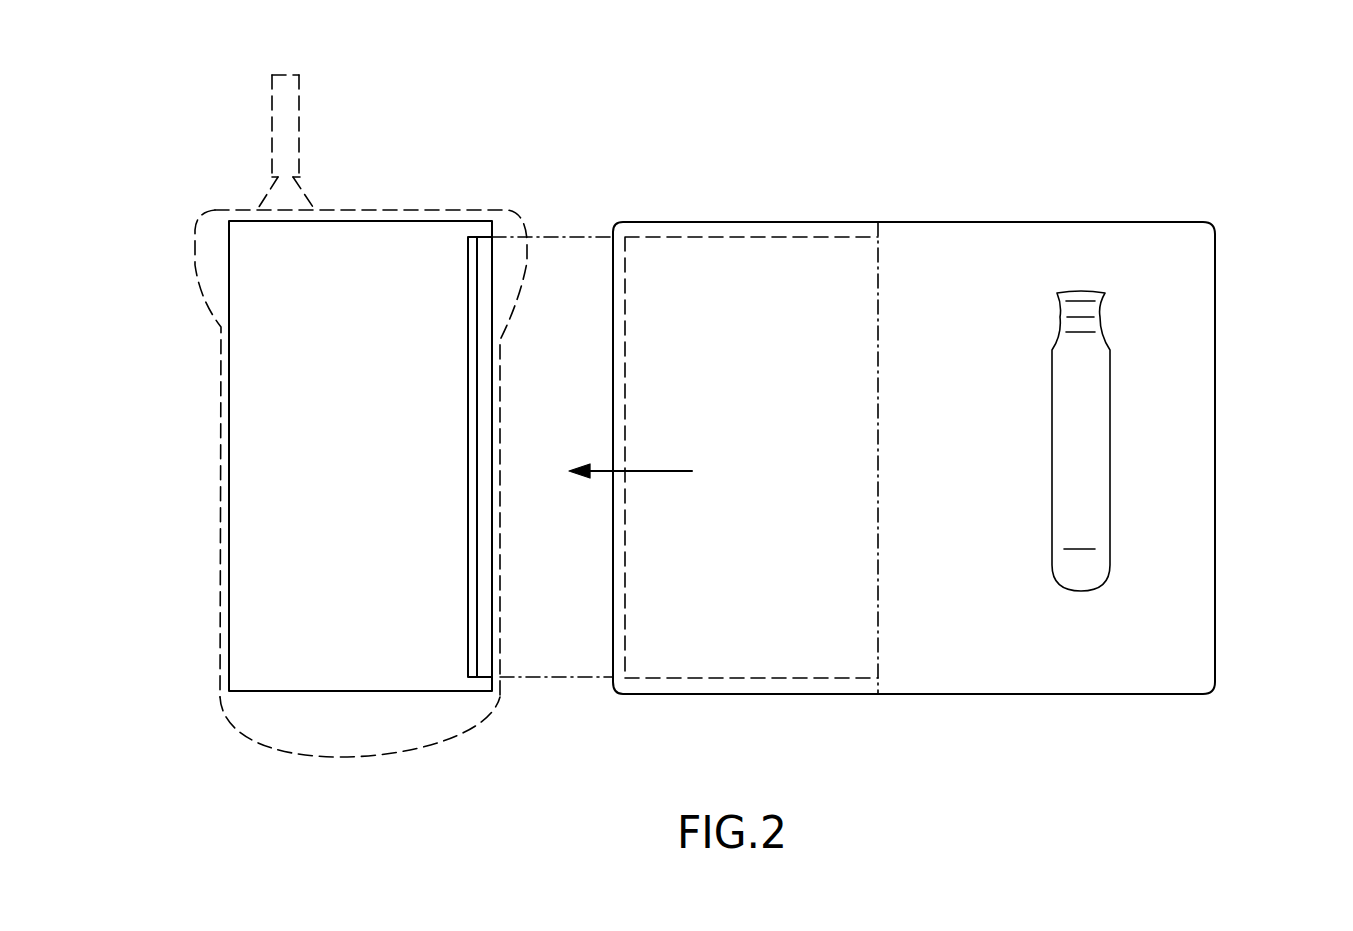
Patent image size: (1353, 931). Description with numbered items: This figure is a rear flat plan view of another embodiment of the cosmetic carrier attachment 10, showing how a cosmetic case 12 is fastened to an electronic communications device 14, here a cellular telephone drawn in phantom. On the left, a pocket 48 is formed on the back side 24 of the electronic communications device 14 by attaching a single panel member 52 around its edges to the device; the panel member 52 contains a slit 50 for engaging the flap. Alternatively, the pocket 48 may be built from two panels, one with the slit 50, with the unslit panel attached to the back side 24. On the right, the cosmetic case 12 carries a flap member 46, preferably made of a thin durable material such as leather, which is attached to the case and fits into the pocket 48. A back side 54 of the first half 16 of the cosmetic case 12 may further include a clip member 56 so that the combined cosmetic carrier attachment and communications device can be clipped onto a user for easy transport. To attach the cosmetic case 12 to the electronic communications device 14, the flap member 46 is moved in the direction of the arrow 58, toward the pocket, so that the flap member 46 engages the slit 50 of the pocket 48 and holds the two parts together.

The cosmetic carrier attachment 10 is at (704, 127).
The cosmetic case 12 is at (968, 220).
The electronic communications device 14 is at (197, 265).
The first half 16 is at (1182, 342).
The back side 24 is at (372, 732).
The flap member 46 is at (740, 273).
The pocket 48 is at (295, 477).
The slit 50 is at (472, 575).
The panel member 52 is at (366, 351).
The back side 54 is at (1000, 496).
The clip member 56 is at (1088, 455).
The arrow 58 is at (647, 471).